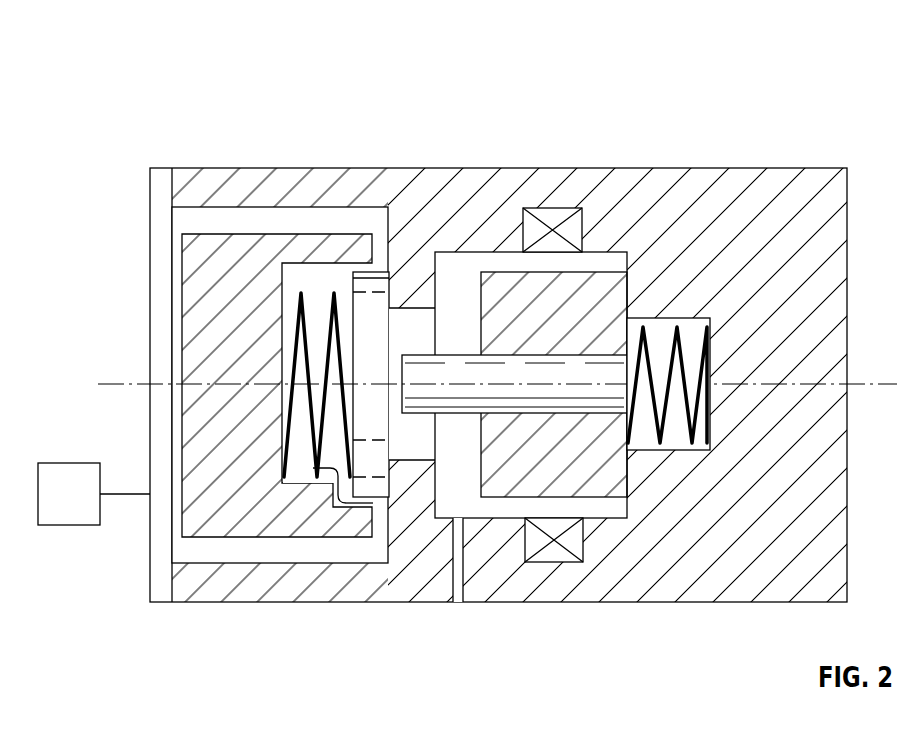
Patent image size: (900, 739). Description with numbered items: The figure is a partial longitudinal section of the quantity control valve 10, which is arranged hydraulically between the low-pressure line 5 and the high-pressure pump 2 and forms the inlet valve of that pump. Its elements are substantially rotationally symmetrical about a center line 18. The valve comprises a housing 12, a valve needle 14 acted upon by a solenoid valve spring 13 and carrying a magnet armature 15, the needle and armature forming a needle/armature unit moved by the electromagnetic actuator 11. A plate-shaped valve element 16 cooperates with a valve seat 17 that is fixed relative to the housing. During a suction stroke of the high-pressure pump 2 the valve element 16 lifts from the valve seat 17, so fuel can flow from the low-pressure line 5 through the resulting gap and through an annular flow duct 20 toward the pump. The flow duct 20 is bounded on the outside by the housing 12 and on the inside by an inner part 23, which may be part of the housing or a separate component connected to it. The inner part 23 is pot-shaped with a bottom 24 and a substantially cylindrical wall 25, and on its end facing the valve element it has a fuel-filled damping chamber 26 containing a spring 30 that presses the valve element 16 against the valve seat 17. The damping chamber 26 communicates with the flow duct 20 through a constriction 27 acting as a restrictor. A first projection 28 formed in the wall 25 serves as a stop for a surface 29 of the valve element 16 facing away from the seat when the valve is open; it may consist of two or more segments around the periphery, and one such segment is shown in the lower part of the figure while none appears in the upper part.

The high-pressure pump 2 is at (68, 510).
The low-pressure line 5 is at (462, 558).
The quantity control valve 10 is at (121, 115).
The actuator 11 is at (553, 555).
The housing 12 is at (532, 192).
The solenoid valve spring 13 is at (680, 343).
The valve needle 14 is at (458, 373).
The magnet armature 15 is at (593, 293).
The valve element 16 is at (377, 335).
The valve seat 17 is at (382, 503).
The center line 18 is at (117, 380).
The annular flow duct 20 is at (283, 222).
The inner part 23 is at (203, 423).
The bottom 24 is at (213, 268).
The wall 25 is at (313, 490).
The damping chamber 26 is at (292, 282).
The constriction 27 is at (362, 497).
The first projection 28 is at (345, 500).
The surface 29 is at (353, 287).
The spring 30 is at (327, 312).